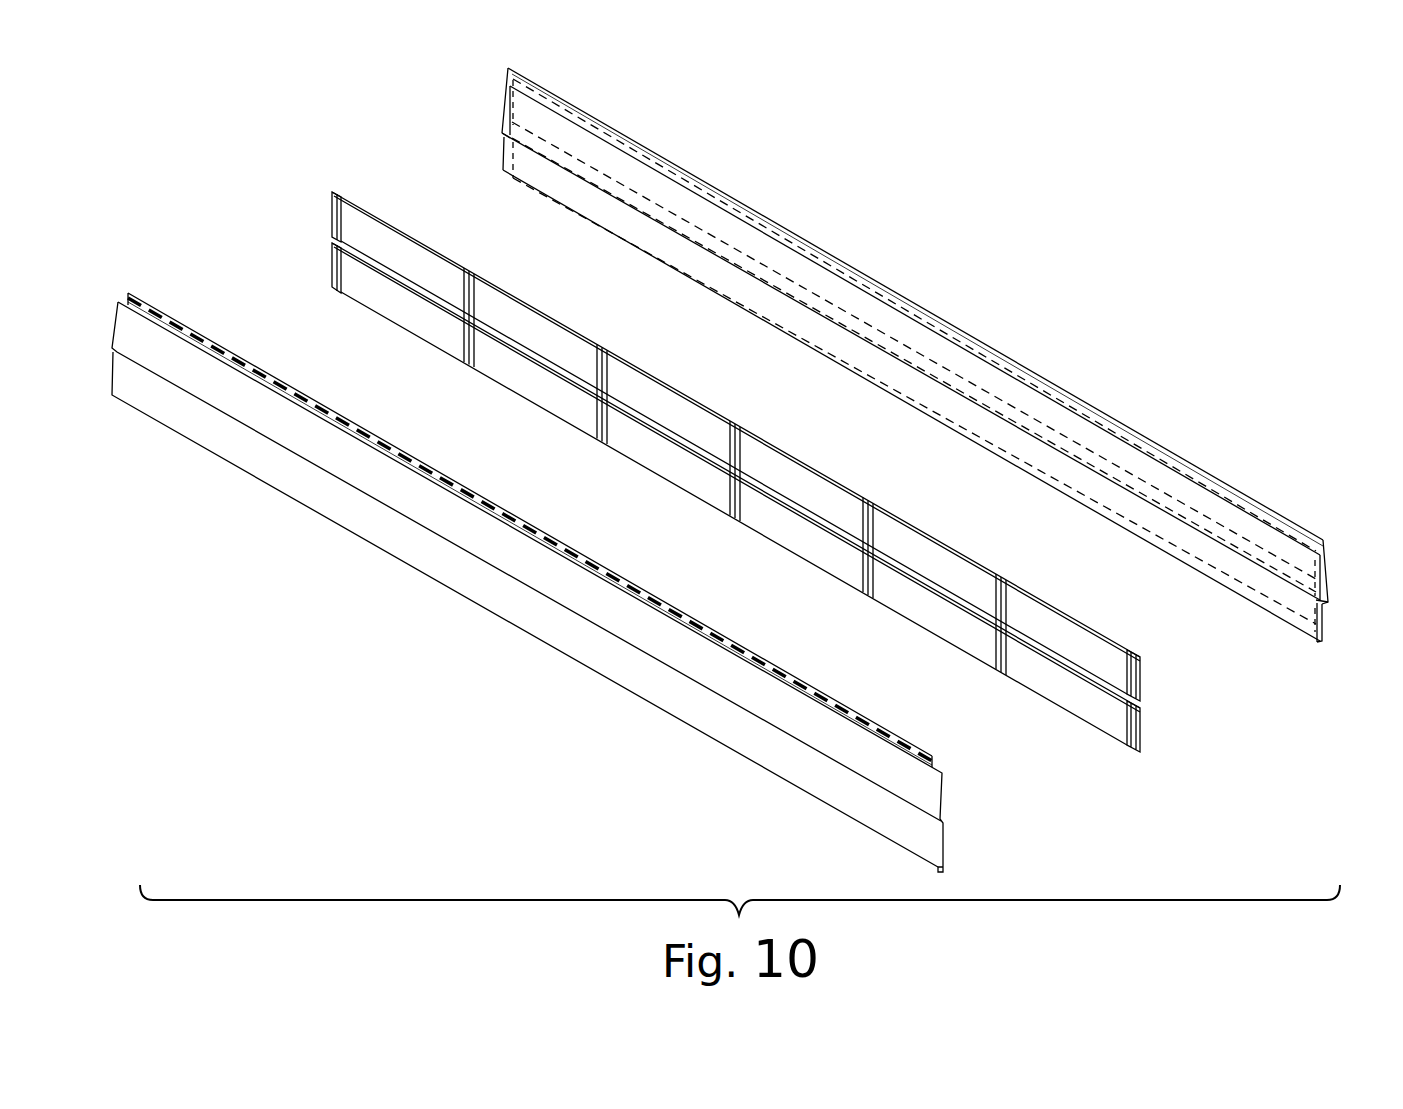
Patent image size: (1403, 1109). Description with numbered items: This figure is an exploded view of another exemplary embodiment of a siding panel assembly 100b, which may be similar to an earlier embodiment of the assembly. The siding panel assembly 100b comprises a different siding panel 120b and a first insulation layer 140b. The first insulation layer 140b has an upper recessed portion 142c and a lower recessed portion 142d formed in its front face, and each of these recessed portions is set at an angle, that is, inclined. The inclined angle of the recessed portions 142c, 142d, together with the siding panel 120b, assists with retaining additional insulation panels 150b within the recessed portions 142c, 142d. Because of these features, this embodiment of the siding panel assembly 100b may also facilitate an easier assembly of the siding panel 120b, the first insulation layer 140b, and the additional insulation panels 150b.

The siding panel assembly 100b is at (400, 692).
The siding panel 120b is at (952, 815).
The additional insulation panels 150b is at (400, 255).
The first insulation layer 140b is at (1337, 620).
The upper recessed portion 142c is at (858, 308).
The lower recessed portion 142d is at (893, 368).